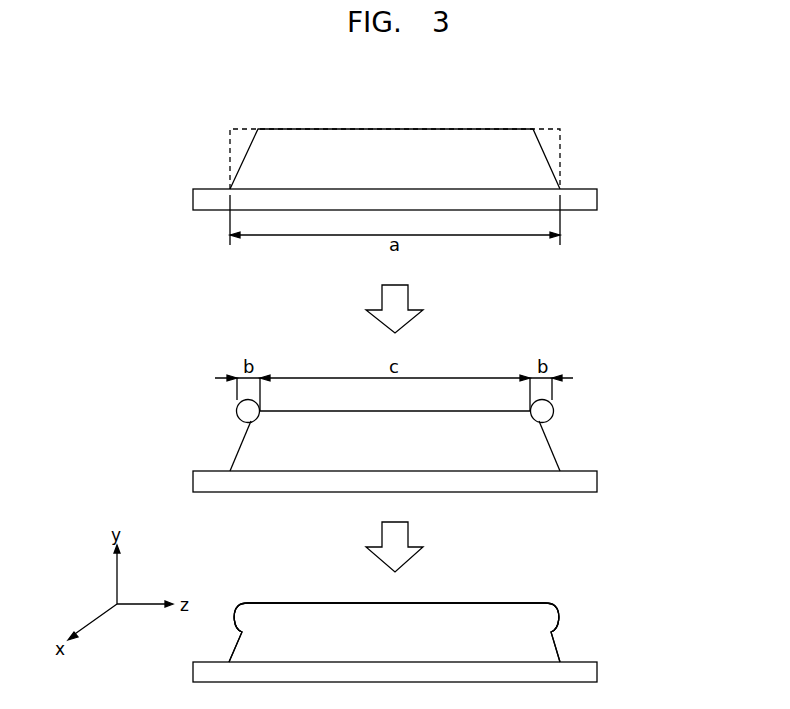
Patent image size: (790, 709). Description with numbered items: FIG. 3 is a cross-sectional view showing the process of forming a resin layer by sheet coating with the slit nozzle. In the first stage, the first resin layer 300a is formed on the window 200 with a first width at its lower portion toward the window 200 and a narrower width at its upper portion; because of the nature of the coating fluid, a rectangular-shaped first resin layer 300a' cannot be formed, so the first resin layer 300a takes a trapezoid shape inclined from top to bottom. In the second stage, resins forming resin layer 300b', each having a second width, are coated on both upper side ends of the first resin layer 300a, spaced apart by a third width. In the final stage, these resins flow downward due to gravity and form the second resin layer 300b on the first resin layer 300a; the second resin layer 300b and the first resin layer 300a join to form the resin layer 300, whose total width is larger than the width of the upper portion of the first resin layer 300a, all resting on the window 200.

The window 200 is at (597, 200).
The first resin layer 300a is at (438, 395).
The rectangular-shaped first resin layer 300a' is at (441, 159).
The resin layer 300b' is at (444, 417).
The second resin layer 300b is at (440, 615).
The resin layer 300 is at (649, 603).